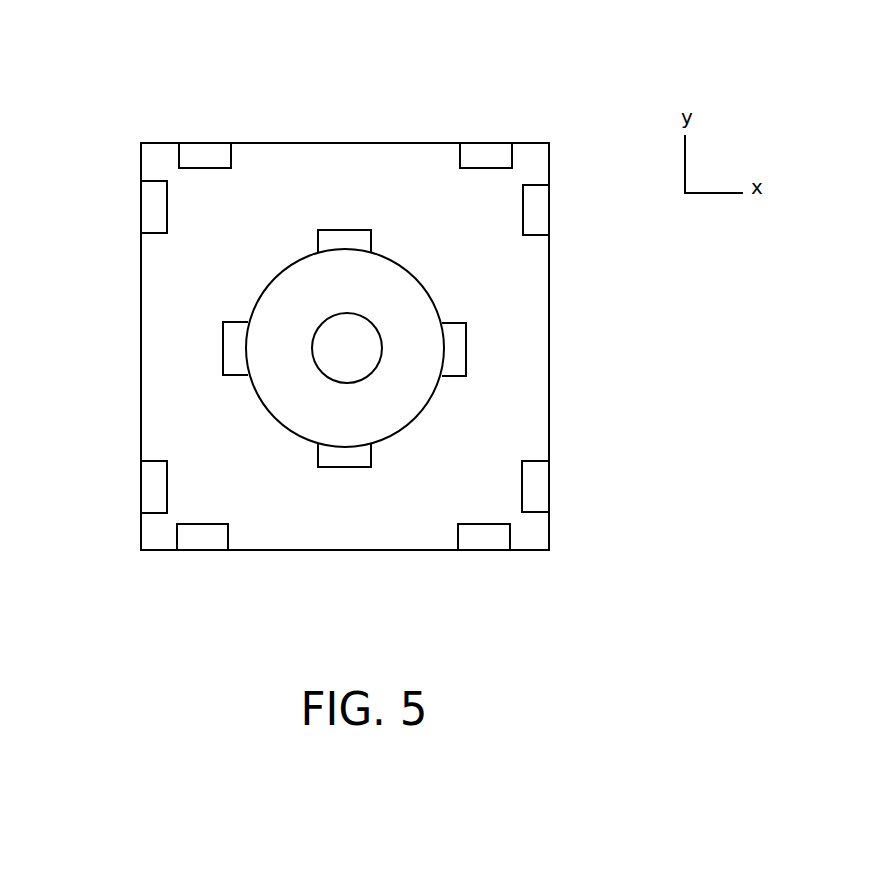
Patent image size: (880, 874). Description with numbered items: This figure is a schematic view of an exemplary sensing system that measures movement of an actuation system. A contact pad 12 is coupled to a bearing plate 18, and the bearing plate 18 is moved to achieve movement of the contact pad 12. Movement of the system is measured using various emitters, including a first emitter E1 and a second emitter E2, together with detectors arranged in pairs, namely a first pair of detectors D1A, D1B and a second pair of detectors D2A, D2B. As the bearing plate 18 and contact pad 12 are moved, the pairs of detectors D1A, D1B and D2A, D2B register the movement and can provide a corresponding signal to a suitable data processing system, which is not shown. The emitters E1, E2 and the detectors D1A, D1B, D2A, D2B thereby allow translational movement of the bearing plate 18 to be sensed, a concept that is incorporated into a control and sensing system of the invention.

The bearing plate 18 is at (293, 262).
The contact pad 12 is at (315, 335).
The emitter E1 is at (466, 337).
The emitter E2 is at (347, 467).
The detector D1A is at (549, 206).
The detector D1B is at (549, 479).
The detector D2A is at (202, 550).
The detector D2B is at (483, 550).